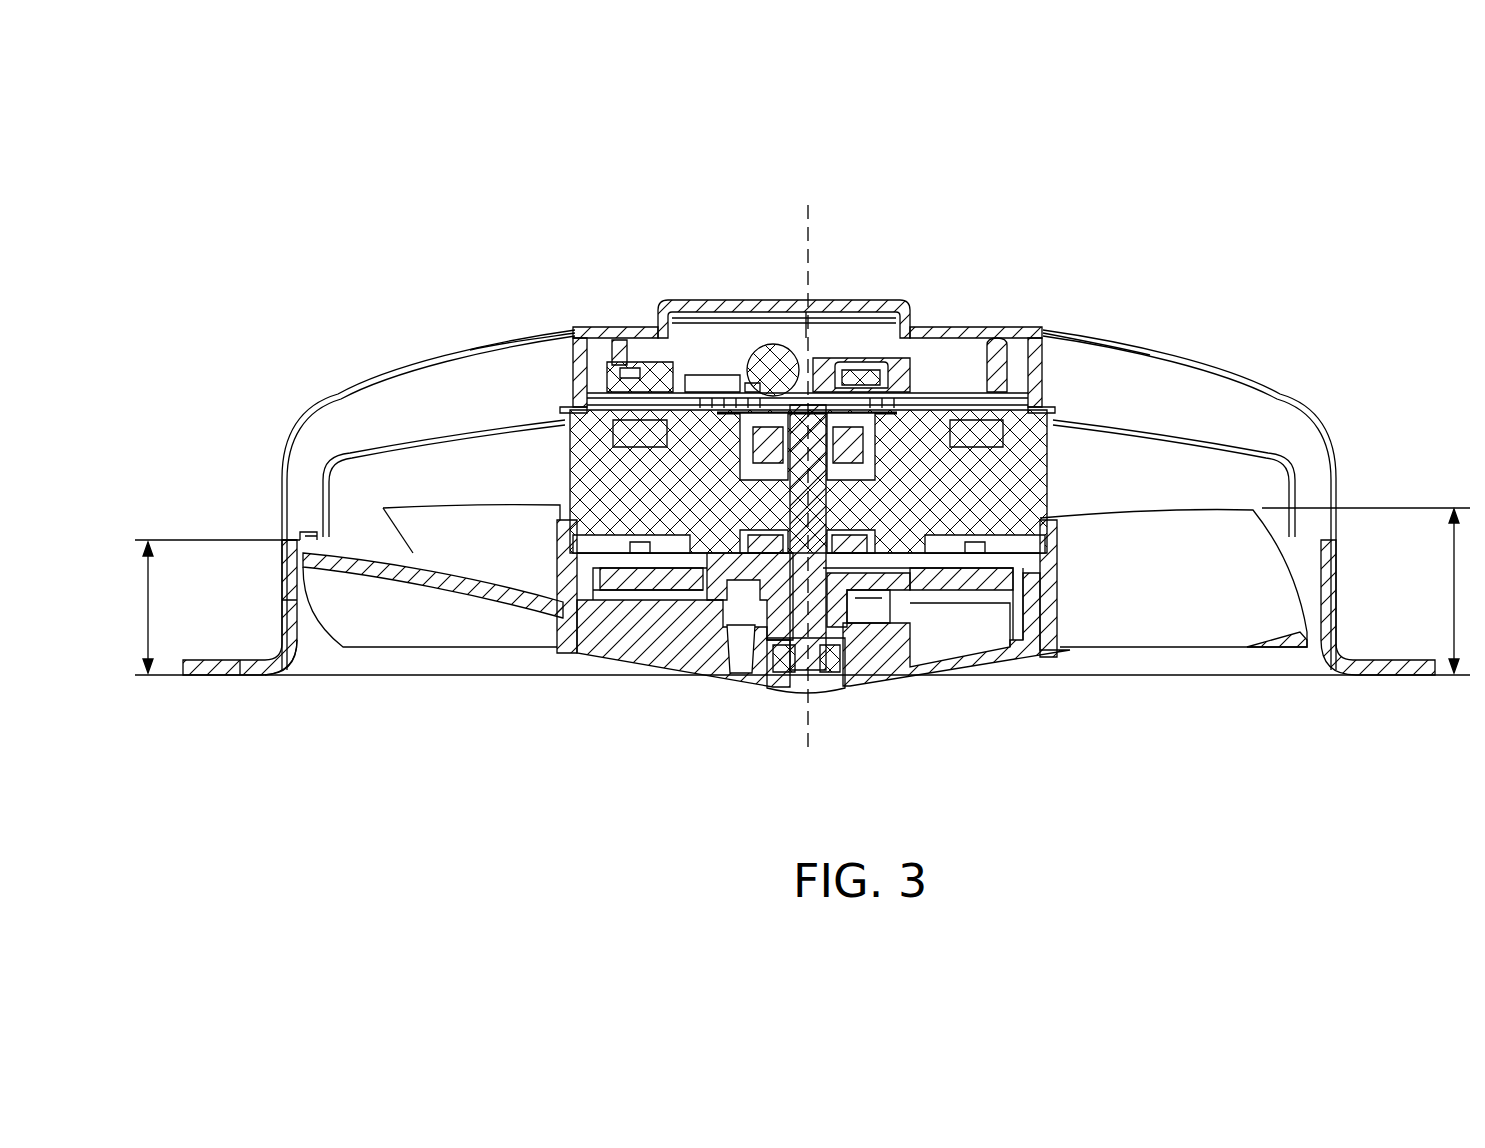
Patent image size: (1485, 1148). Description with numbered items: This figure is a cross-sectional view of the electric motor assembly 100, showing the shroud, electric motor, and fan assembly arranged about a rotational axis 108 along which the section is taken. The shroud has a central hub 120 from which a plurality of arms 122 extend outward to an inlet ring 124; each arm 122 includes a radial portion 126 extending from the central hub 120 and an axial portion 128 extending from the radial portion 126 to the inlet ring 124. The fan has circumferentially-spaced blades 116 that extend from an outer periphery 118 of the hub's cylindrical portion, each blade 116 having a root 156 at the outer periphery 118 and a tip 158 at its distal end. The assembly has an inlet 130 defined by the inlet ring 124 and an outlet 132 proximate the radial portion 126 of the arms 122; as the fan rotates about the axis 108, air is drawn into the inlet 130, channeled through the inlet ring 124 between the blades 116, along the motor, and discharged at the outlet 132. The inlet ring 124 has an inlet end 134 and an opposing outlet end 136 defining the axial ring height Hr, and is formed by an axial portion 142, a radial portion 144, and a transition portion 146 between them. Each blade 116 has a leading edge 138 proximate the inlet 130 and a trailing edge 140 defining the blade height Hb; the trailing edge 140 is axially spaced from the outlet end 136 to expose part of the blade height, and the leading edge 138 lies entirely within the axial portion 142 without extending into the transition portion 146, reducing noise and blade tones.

The electric motor assembly 100 is at (285, 190).
The rotational axis 108 is at (805, 240).
The blades 116 is at (460, 623).
The outer periphery 118 is at (553, 533).
The central hub 120 is at (918, 330).
The arms 122 is at (410, 376).
The inlet ring 124 is at (1329, 597).
The radial portion 126 is at (512, 360).
The axial portion 128 is at (290, 492).
The inlet 130 is at (636, 754).
The outlet 132 is at (1089, 292).
The inlet end 134 is at (207, 676).
The outlet end 136 is at (290, 522).
The leading edge 138 is at (1133, 650).
The trailing edge 140 is at (1118, 507).
The axial portion 142 is at (287, 560).
The radial portion 144 is at (245, 671).
The transition portion 146 is at (290, 661).
The root 156 is at (550, 642).
The tip 158 is at (307, 563).